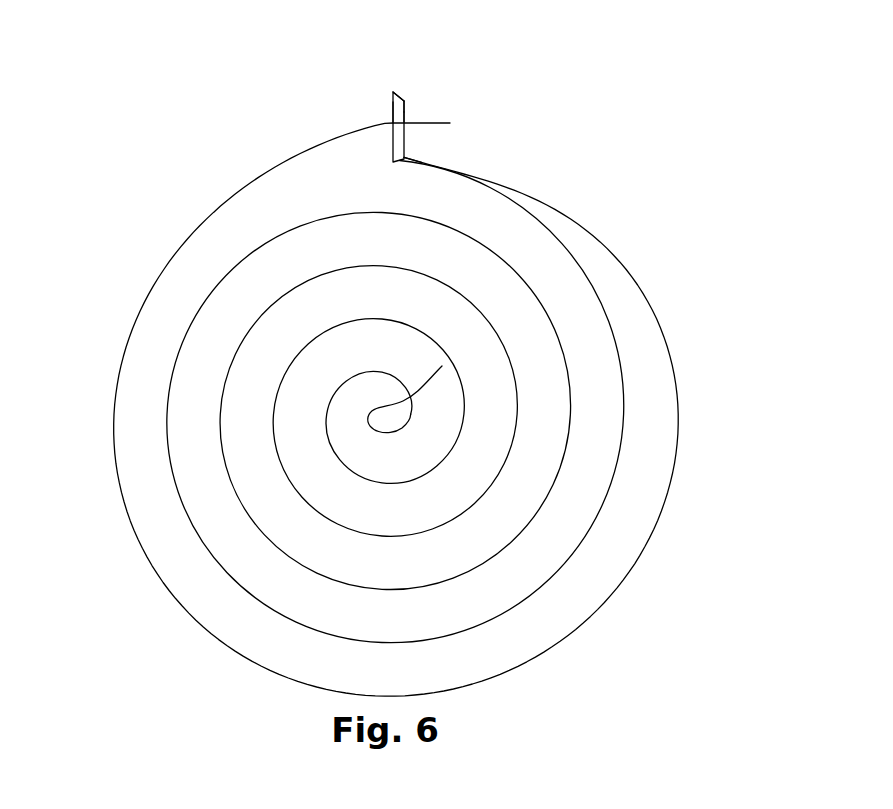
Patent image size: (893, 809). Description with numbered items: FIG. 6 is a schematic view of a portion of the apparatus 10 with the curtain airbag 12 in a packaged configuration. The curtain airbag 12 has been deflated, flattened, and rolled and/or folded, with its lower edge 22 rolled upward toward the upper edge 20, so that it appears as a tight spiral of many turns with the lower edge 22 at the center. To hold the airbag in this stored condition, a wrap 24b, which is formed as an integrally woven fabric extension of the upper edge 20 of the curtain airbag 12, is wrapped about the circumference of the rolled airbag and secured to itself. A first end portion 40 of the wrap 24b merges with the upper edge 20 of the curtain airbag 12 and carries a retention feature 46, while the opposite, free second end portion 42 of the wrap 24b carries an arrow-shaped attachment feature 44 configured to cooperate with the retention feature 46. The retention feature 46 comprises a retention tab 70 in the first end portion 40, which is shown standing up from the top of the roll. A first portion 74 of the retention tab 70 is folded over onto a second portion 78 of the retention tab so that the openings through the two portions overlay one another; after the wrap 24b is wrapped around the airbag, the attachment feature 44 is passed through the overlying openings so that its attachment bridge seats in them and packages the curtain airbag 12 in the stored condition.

The apparatus 10 is at (672, 198).
The curtain airbag 12 is at (623, 353).
The upper edge 20 is at (405, 158).
The lower edge 22 is at (442, 366).
The wrap 24b is at (665, 490).
The first end portion 40 is at (391, 151).
The second end portion 42 is at (218, 205).
The attachment feature 44 is at (433, 123).
The retention feature 46 is at (405, 112).
The retention tab 70 is at (393, 102).
The first portion 74 is at (405, 102).
The second portion 78 is at (393, 112).